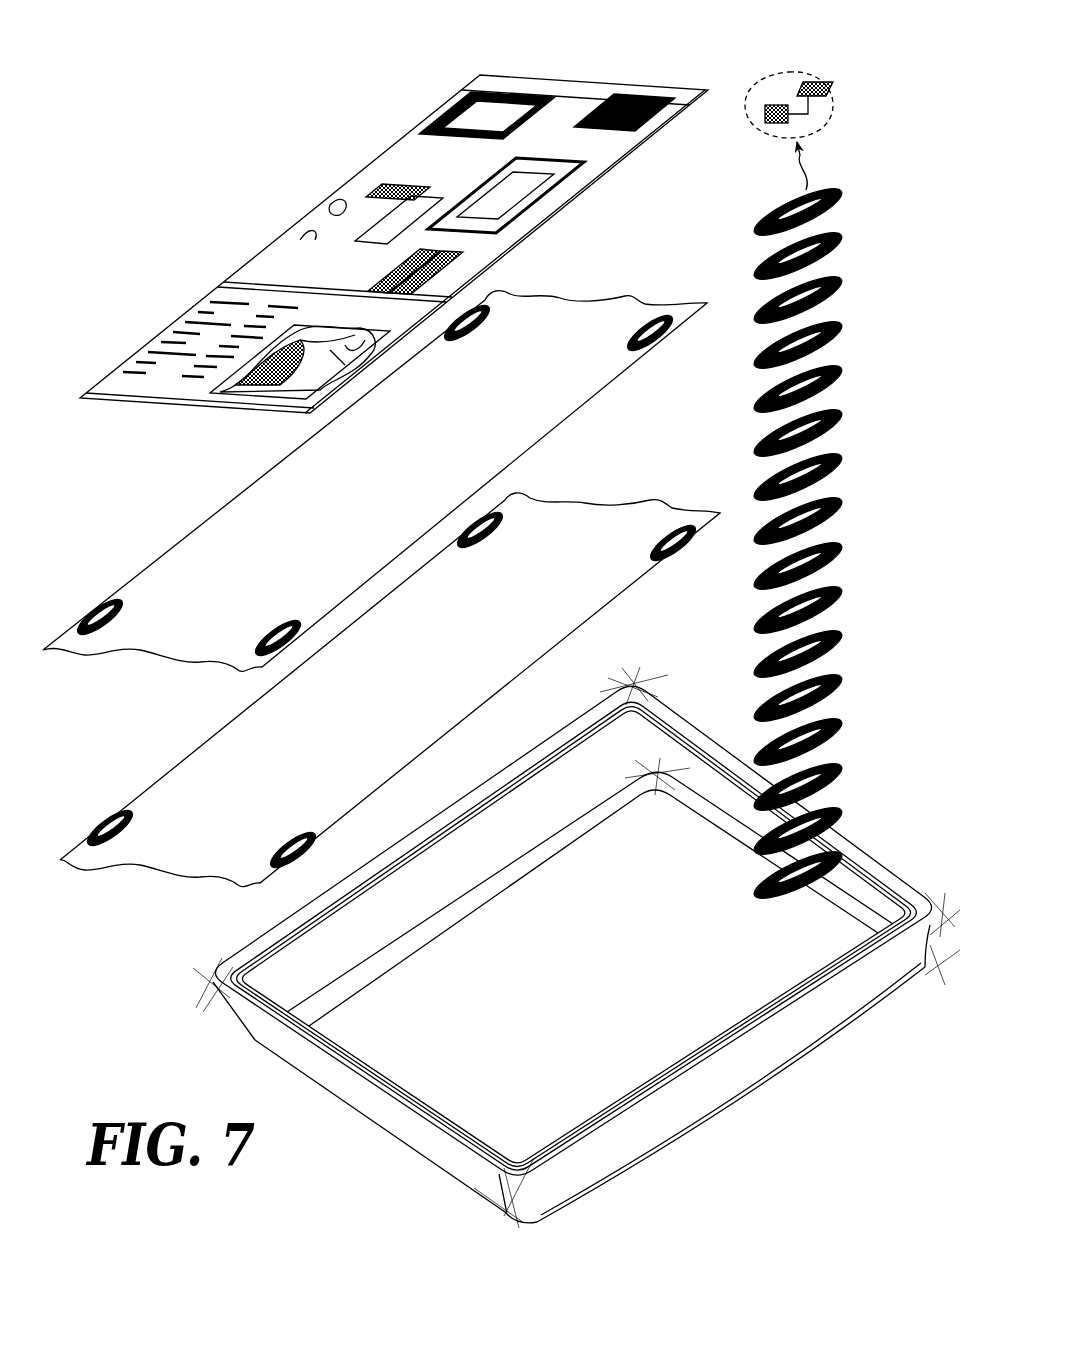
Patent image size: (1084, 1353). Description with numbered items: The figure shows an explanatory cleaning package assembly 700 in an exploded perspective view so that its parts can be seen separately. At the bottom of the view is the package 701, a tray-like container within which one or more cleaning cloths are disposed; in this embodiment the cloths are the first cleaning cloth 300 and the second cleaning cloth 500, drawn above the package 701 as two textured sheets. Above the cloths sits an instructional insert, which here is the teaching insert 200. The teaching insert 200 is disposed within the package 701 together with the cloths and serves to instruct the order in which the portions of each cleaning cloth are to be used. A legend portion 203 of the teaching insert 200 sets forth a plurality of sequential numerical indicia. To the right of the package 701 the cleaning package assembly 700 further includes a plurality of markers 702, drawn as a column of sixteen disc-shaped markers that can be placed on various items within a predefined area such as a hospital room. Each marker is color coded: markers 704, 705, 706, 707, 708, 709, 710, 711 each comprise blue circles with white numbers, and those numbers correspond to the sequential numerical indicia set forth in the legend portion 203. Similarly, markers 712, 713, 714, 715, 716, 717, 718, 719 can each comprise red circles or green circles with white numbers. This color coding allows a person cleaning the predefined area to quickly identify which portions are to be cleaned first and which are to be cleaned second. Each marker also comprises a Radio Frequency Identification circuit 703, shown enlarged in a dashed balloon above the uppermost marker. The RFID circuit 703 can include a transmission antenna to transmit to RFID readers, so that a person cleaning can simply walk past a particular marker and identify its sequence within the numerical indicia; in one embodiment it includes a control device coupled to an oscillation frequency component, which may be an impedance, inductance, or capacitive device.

The teaching insert 200 is at (411, 241).
The legend portion 203 is at (150, 385).
The first cleaning cloth 300 is at (556, 288).
The second cleaning cloth 500 is at (594, 501).
The cleaning package assembly 700 is at (206, 236).
The package 701 is at (736, 1078).
The plurality of markers 702 is at (729, 415).
The Radio Frequency Identification (RFID) circuit 703 is at (818, 108).
The marker 704 is at (843, 192).
The marker 705 is at (843, 236).
The marker 706 is at (843, 280).
The marker 707 is at (843, 325).
The marker 708 is at (843, 369).
The marker 709 is at (843, 413).
The marker 710 is at (843, 457).
The marker 711 is at (843, 501).
The marker 712 is at (843, 546).
The marker 713 is at (843, 590).
The marker 714 is at (843, 634).
The marker 715 is at (843, 678).
The marker 716 is at (843, 722).
The marker 717 is at (843, 767).
The marker 718 is at (843, 811).
The marker 719 is at (843, 855).